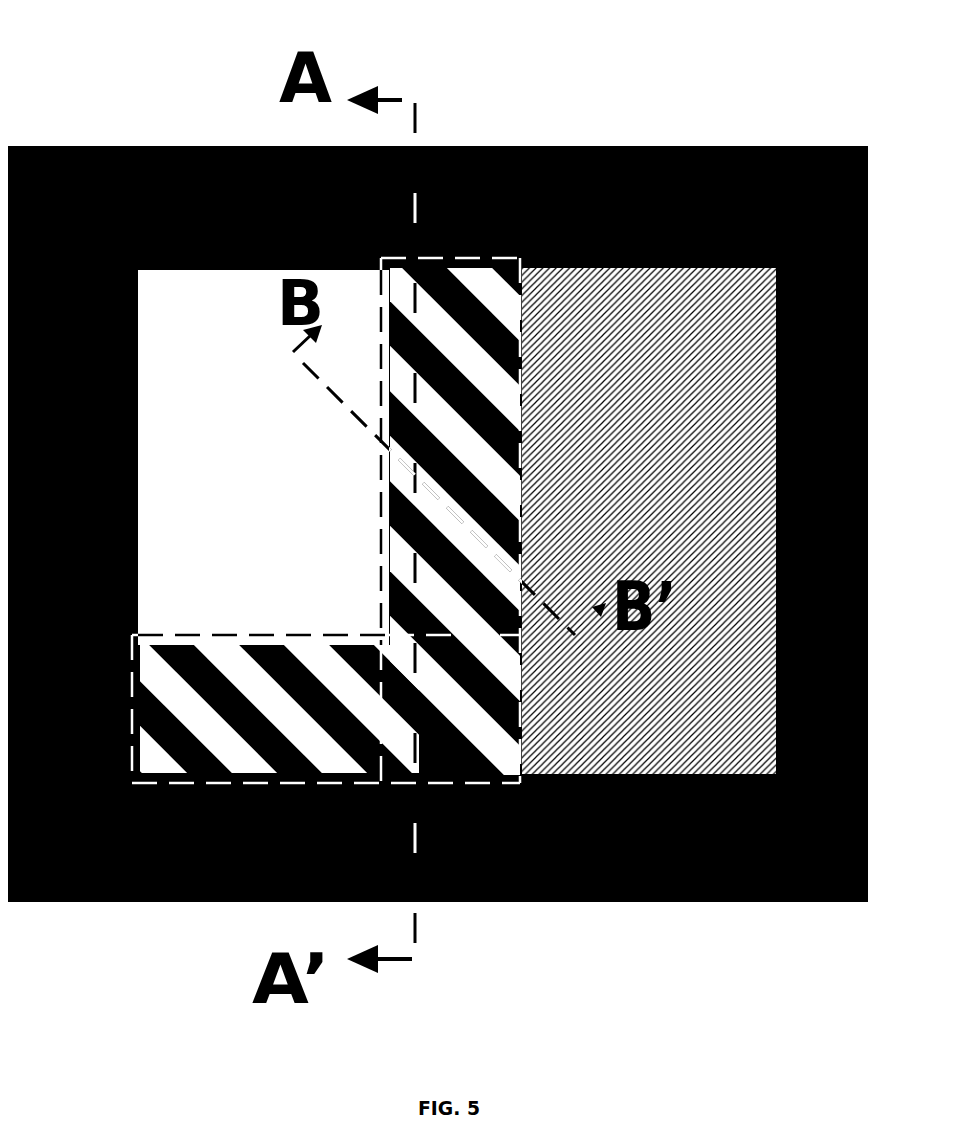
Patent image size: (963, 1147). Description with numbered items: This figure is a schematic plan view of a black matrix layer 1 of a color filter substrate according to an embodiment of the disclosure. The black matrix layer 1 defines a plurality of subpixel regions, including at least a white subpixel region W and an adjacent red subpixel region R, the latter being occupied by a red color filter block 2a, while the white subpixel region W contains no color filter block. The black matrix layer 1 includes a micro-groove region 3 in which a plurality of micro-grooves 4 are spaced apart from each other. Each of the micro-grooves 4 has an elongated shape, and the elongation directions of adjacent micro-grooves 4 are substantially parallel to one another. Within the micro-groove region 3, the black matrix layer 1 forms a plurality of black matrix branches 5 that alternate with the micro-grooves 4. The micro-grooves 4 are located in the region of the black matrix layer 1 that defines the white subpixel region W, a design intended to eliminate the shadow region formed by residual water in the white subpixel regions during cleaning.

The black matrix layer 1 is at (438, 524).
The white subpixel region W is at (167, 268).
The red subpixel region R is at (652, 270).
The red color filter block 2a is at (649, 521).
The micro-groove region 3 is at (448, 258).
The micro-grooves 4 is at (459, 712).
The black matrix branches 5 is at (300, 698).